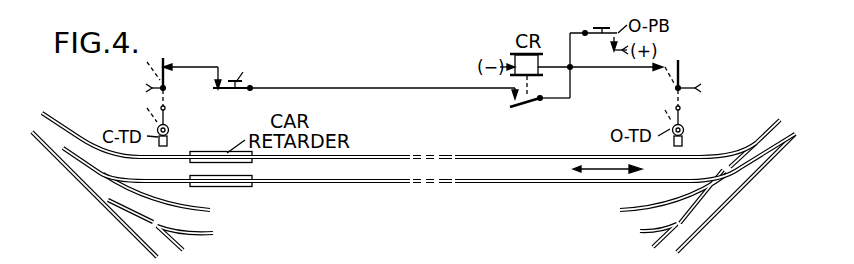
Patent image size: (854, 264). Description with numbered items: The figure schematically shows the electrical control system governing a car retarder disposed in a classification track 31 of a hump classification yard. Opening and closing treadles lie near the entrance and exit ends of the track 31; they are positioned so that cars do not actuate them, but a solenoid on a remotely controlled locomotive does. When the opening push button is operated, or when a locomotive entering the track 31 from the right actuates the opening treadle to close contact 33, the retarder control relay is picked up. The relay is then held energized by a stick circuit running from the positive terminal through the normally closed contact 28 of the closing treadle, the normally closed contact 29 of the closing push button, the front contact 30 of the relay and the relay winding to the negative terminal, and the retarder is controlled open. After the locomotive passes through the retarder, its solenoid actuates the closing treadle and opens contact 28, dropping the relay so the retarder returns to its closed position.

The normally closed contact of treadle C-TD 28 is at (165, 77).
The normally closed contact of push button C-PB 29 is at (220, 92).
The front contact of relay CR 30 is at (525, 108).
The classification track 31 is at (498, 172).
The contact of treadle O-TD 33 is at (682, 65).